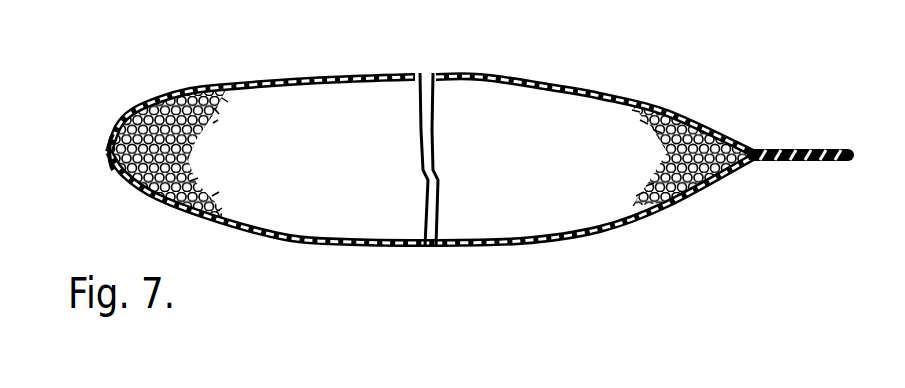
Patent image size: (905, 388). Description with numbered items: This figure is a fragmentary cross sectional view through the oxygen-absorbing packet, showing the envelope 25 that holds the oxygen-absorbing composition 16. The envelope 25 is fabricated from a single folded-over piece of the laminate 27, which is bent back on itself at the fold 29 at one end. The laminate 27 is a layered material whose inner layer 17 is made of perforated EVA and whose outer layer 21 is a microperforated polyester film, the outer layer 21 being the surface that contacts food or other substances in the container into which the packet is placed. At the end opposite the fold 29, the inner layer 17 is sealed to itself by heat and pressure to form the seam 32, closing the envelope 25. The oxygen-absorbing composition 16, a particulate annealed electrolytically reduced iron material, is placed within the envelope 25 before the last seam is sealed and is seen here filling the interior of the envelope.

The oxygen-absorbing composition 16 is at (187, 162).
The inner layer 17 is at (377, 246).
The outer layer 21 is at (453, 72).
The envelope 25 is at (268, 80).
The laminate 27 is at (604, 96).
The fold 29 is at (108, 153).
The seam 32 is at (808, 152).